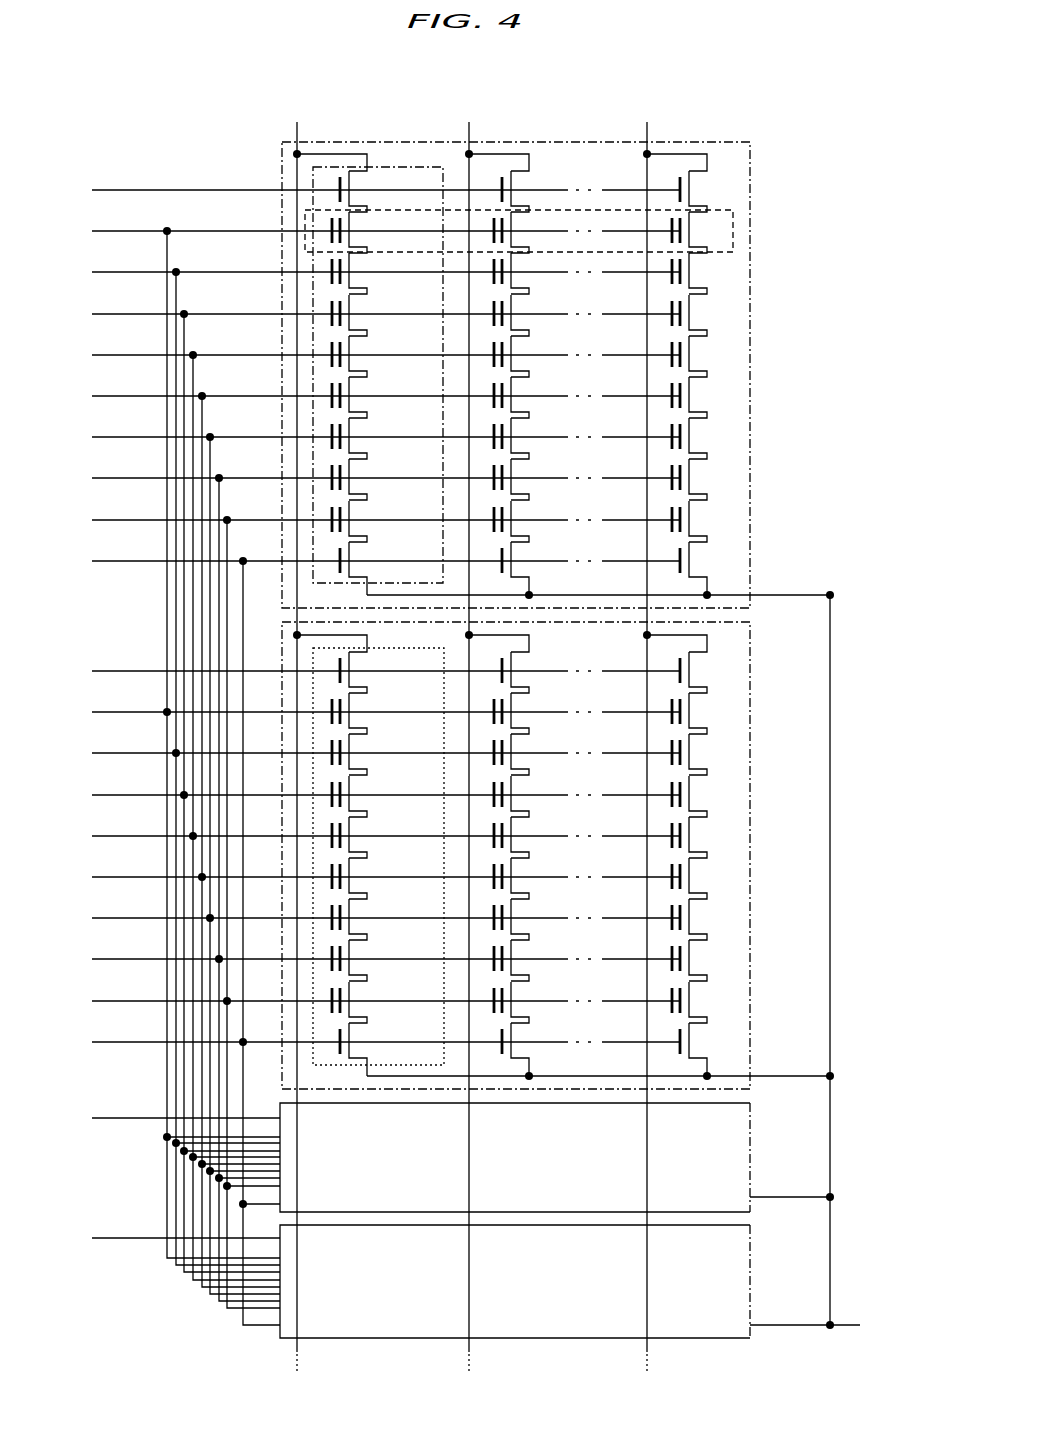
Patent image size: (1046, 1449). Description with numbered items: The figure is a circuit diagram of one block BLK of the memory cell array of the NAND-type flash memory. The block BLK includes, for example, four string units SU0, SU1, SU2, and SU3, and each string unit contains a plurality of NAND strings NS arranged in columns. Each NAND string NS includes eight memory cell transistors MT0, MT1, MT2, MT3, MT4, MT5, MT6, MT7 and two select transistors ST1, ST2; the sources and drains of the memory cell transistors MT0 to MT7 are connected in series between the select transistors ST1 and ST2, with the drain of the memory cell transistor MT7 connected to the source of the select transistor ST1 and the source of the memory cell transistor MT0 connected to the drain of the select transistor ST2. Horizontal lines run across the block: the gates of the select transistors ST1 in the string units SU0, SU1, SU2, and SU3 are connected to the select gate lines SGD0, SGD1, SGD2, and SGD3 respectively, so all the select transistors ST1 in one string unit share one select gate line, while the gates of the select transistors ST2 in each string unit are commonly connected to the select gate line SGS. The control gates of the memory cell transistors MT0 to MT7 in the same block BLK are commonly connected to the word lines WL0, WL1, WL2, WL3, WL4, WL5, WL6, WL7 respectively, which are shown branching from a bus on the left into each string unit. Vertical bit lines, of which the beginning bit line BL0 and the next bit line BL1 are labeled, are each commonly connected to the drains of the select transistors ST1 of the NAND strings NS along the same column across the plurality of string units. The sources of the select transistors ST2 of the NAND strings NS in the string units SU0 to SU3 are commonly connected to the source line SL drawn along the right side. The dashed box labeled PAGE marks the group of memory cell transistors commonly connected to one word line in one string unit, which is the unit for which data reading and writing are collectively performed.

The block BLK is at (804, 102).
The string unit SU0 is at (751, 348).
The string unit SU1 is at (751, 835).
The string unit SU2 is at (751, 1155).
The string unit SU3 is at (751, 1282).
The NAND string NS is at (426, 161).
The page PAGE is at (734, 232).
The bit line BL0 is at (322, 731).
The bit line BL1 is at (492, 731).
The select transistor ST1 is at (358, 180).
The select transistor ST2 is at (358, 558).
The memory cell transistor MT0 is at (358, 516).
The memory cell transistor MT1 is at (358, 474).
The memory cell transistor MT2 is at (358, 433).
The memory cell transistor MT3 is at (358, 392).
The memory cell transistor MT4 is at (358, 351).
The memory cell transistor MT5 is at (358, 310).
The memory cell transistor MT6 is at (358, 268).
The memory cell transistor MT7 is at (358, 227).
The select gate line SGD0 is at (359, 192).
The select gate line SGD1 is at (359, 673).
The select gate line SGD2 is at (159, 1120).
The select gate line SGD3 is at (159, 1240).
The select gate line SGS is at (366, 938).
The word line WL0 is at (366, 909).
The word line WL1 is at (366, 884).
The word line WL2 is at (366, 860).
The word line WL3 is at (366, 836).
The word line WL4 is at (366, 812).
The word line WL5 is at (366, 788).
The word line WL6 is at (366, 763).
The word line WL7 is at (366, 739).
The source line SL is at (629, 965).